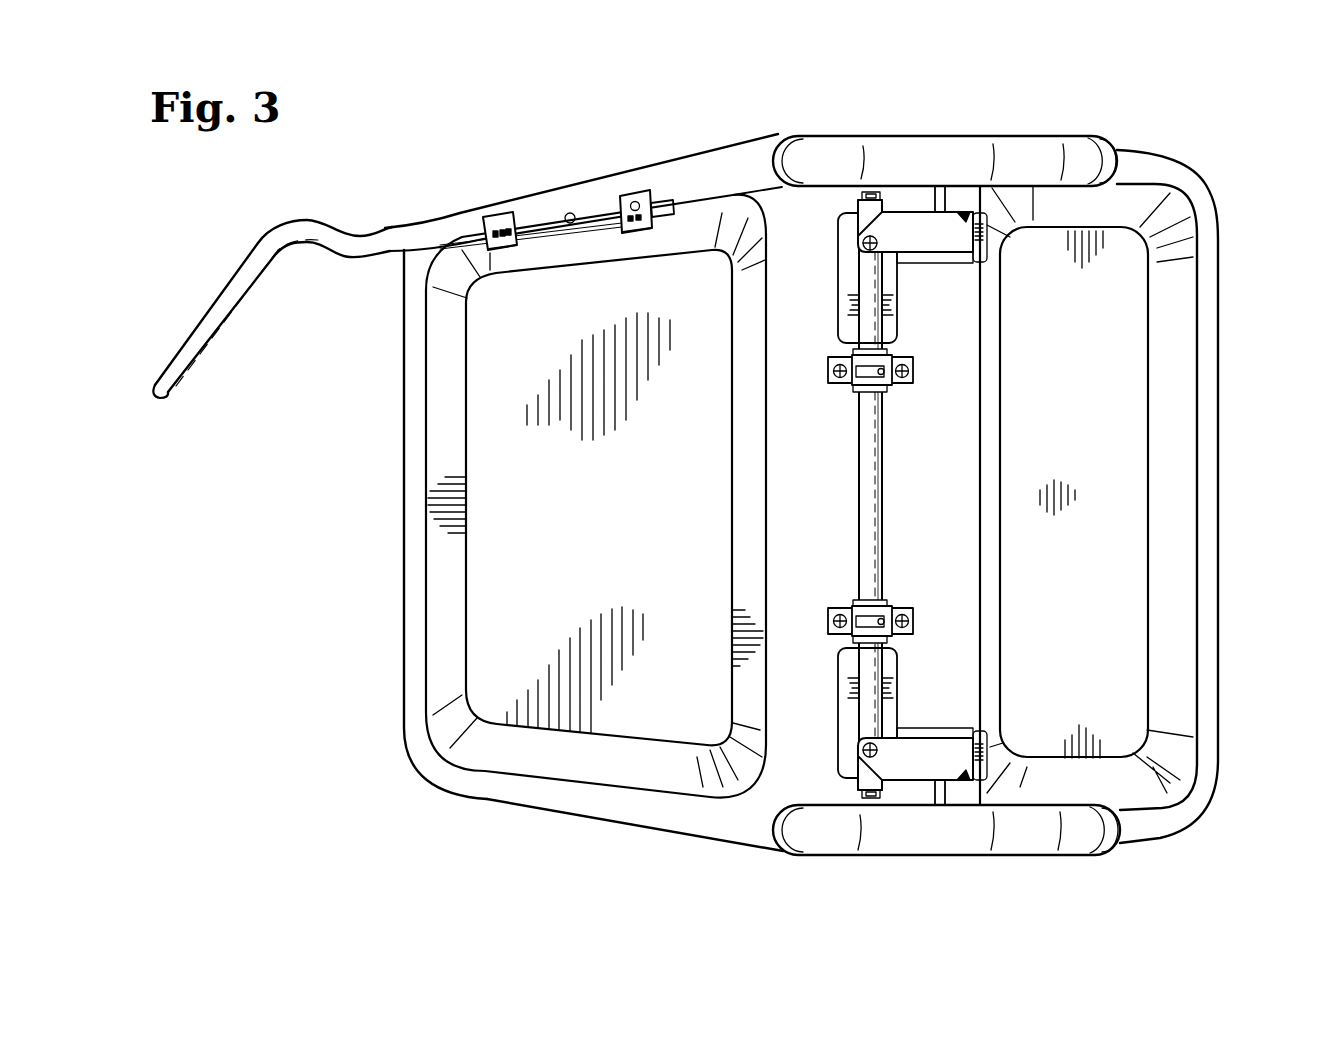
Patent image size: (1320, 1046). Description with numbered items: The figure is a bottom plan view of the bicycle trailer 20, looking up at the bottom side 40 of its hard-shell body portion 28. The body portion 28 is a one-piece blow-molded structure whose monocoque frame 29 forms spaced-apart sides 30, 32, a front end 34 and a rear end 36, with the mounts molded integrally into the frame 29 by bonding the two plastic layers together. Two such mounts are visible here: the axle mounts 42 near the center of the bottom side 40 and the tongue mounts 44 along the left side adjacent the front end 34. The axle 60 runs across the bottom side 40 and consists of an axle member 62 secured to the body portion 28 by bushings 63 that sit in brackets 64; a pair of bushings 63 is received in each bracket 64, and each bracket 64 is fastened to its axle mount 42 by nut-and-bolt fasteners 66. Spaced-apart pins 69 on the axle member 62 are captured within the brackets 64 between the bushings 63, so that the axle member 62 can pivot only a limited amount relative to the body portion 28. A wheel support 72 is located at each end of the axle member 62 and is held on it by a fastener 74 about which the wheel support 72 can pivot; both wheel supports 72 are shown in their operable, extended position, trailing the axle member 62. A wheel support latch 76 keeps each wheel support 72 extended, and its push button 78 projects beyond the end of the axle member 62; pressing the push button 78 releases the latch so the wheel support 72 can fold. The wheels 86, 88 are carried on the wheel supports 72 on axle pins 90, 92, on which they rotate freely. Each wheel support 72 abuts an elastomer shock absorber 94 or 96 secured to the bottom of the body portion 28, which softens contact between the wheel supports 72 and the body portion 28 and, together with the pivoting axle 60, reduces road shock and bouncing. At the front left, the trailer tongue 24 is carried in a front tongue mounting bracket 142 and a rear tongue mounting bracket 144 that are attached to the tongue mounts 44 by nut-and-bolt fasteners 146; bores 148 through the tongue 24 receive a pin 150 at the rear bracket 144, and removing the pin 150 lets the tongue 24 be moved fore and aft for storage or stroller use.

The bicycle trailer 20 is at (1256, 157).
The trailer tongue 24 is at (373, 230).
The hard-shell body portion 28 is at (1250, 360).
The monocoque frame 29 is at (1175, 637).
The side 30 is at (723, 135).
The side 32 is at (688, 842).
The front end 34 is at (403, 525).
The rear end 36 is at (1222, 447).
The bottom side 40 is at (779, 527).
The axle mount 42 is at (900, 390).
The tongue mount 44 is at (503, 251).
The axle 60 is at (825, 494).
The axle member 62 is at (878, 468).
The bushing 63 is at (855, 390).
The bracket 64 is at (915, 373).
The fastener 66 is at (840, 360).
The pin 69 is at (884, 366).
The wheel support 72 is at (908, 244).
The fastener 74 is at (860, 240).
The wheel support latch 76 is at (851, 203).
The push button 78 is at (872, 192).
The wheel 86 is at (1068, 128).
The wheel 88 is at (1015, 858).
The axle pin 90 is at (942, 198).
The axle pin 92 is at (938, 807).
The shock absorber 94 is at (940, 265).
The shock absorber 96 is at (938, 730).
The front tongue mounting bracket 142 is at (496, 212).
The rear tongue mounting bracket 144 is at (638, 192).
The nut-and-bolt fastener 146 is at (545, 234).
The bore 148 is at (630, 195).
The pin 150 is at (668, 200).